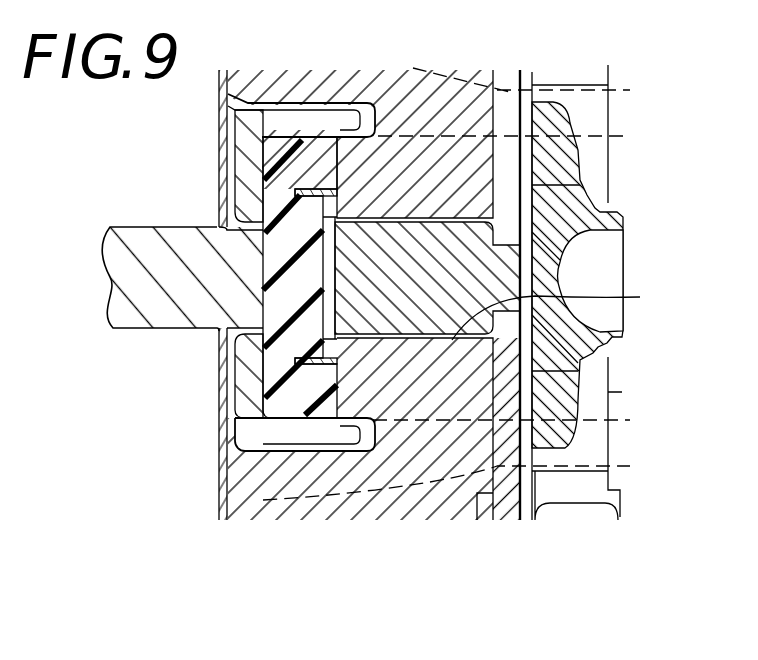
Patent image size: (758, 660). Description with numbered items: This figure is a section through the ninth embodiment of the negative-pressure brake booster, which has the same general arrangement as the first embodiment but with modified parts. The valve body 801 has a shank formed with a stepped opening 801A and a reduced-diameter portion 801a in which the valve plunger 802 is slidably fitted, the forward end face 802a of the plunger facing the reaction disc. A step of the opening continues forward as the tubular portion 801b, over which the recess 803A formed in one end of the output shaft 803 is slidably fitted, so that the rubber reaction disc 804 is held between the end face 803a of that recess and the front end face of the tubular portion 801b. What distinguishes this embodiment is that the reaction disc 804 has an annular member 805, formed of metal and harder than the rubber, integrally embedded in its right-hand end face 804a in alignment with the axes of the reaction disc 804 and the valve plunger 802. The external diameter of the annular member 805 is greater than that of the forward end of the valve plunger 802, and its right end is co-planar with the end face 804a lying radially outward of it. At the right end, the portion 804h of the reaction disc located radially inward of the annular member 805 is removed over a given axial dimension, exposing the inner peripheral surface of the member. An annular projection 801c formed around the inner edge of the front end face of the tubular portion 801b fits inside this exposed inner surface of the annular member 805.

The housing 801 is at (413, 514).
The housing channel portion 801A is at (277, 437).
The spherical bearing surface 801a is at (569, 285).
The tubular portion 801b is at (347, 400).
The annular projection 801c is at (270, 356).
The valve plunger 802 is at (550, 252).
The collar flange 802a is at (323, 250).
The shaft 803 is at (104, 259).
The shaft lip 803A is at (275, 148).
The shaft sleeve 803a is at (265, 280).
The reaction disc 804 is at (280, 136).
The right-hand end face 804a is at (360, 144).
The seal case lower flange 804h is at (222, 333).
The annular member 805 is at (300, 188).